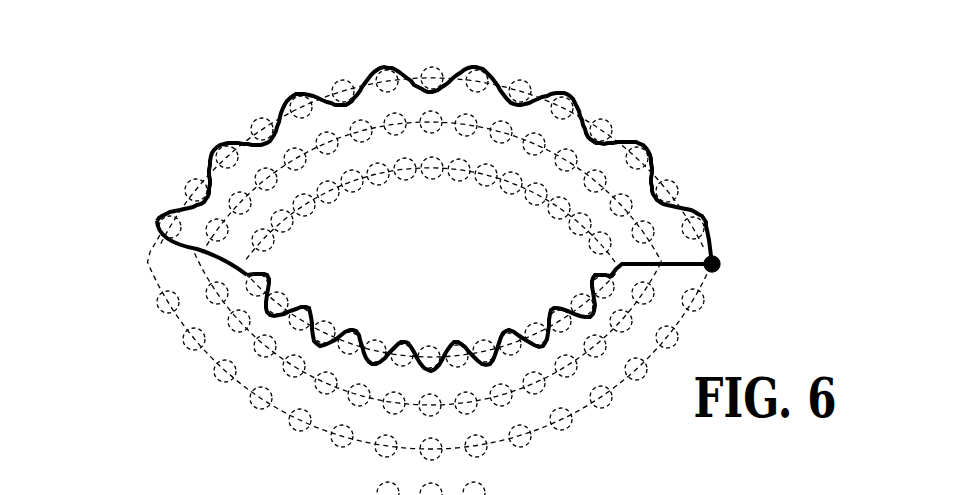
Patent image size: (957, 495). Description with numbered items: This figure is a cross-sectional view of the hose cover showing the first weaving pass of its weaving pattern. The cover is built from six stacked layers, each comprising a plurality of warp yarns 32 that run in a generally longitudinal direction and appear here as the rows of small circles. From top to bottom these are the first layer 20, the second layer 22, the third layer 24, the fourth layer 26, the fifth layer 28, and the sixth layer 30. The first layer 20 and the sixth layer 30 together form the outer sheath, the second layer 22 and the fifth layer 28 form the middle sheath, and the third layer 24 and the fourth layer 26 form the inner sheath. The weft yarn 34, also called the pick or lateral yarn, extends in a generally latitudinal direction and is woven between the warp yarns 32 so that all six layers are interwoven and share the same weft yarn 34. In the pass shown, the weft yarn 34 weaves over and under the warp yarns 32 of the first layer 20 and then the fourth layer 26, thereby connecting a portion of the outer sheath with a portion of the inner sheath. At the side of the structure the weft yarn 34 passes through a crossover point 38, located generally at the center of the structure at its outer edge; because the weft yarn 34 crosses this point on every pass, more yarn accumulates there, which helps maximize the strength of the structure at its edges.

The first layer 20 is at (434, 137).
The second layer 22 is at (550, 148).
The third layer 24 is at (573, 210).
The fourth layer 26 is at (620, 270).
The fifth layer 28 is at (607, 335).
The sixth layer 30 is at (575, 415).
The warp yarns 32 is at (259, 118).
The weft yarn 34 is at (190, 248).
The crossover point 38 is at (712, 264).